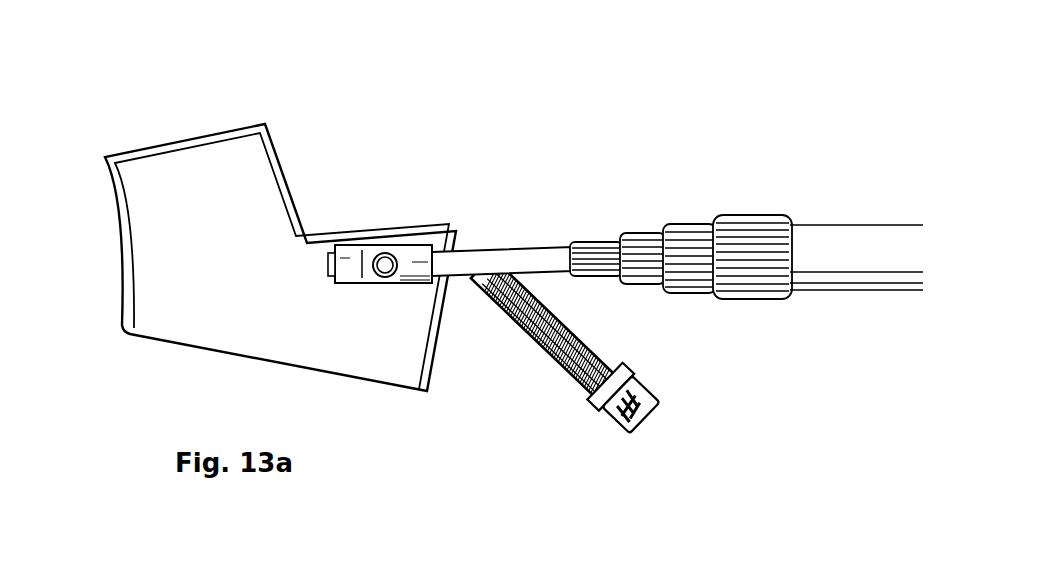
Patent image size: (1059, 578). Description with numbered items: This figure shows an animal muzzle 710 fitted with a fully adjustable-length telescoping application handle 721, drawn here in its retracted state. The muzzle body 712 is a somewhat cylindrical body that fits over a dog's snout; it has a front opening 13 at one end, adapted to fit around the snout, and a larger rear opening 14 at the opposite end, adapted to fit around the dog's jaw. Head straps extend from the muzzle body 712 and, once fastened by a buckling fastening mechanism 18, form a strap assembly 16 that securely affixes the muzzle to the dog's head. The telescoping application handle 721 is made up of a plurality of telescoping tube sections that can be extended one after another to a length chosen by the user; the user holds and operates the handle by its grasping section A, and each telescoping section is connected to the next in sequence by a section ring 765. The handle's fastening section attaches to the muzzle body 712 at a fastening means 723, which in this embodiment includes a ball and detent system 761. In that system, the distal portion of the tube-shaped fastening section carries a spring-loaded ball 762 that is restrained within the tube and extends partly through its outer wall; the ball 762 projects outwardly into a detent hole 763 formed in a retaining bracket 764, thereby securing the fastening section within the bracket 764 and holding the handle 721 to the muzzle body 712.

The muzzle 710 is at (280, 205).
The muzzle body 712 is at (262, 314).
The front opening 13 is at (104, 250).
The fastening means 723 is at (412, 190).
The rear opening 14 is at (446, 349).
The strap assembly 16 is at (553, 353).
The buckling fastening mechanism 18 is at (633, 427).
The ball and detent system 761 is at (389, 301).
The spring-loaded ball 762 is at (385, 268).
The detent hole 763 is at (389, 258).
The retaining bracket 764 is at (362, 268).
The section ring 765 is at (760, 240).
The telescoping application handle 721 is at (746, 207).
The grasping section A is at (842, 283).